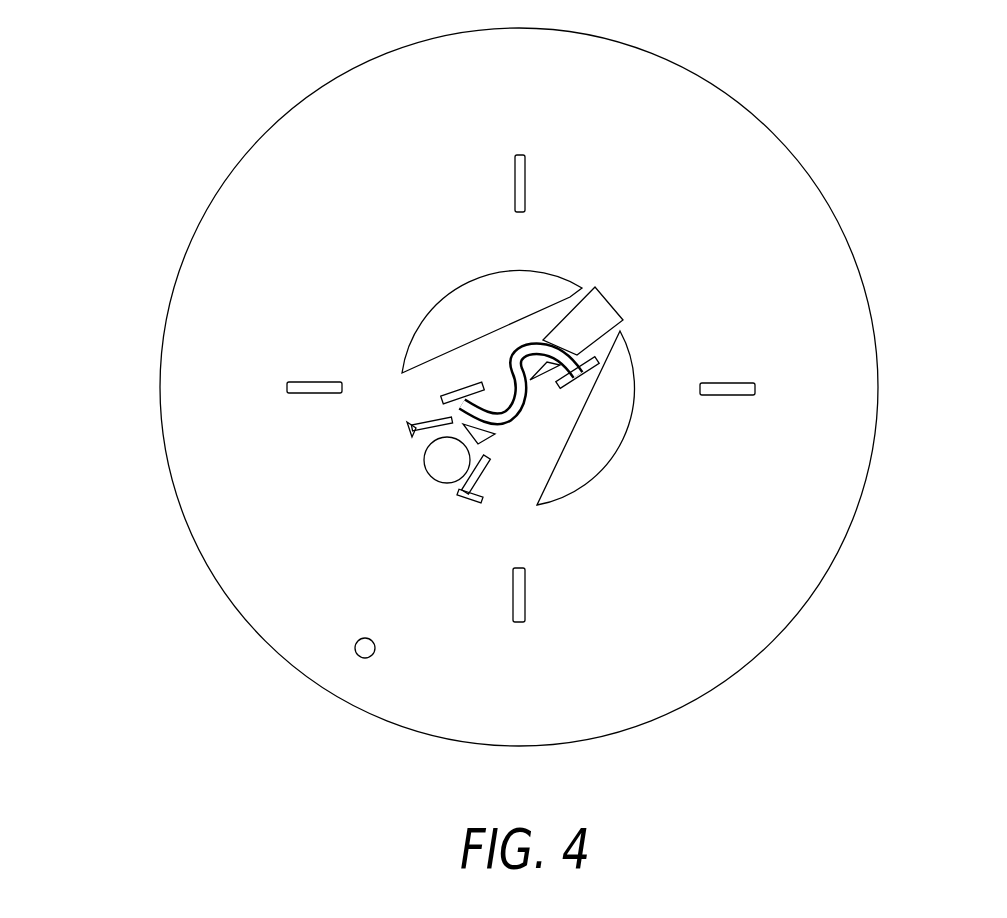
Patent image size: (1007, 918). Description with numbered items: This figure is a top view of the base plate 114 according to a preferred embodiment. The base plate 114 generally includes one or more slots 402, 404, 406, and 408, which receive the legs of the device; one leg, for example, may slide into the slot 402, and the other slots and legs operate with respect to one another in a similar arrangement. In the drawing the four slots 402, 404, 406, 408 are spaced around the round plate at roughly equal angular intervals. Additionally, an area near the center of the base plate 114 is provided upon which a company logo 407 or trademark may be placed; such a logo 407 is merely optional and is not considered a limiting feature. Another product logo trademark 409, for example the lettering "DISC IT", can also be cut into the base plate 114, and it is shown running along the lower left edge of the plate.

The base plate 114 is at (270, 643).
The slot 402 is at (535, 172).
The slot 404 is at (284, 376).
The slot 406 is at (767, 393).
The company logo 407 is at (597, 396).
The slot 408 is at (535, 606).
The product logo trademark 409 is at (498, 708).